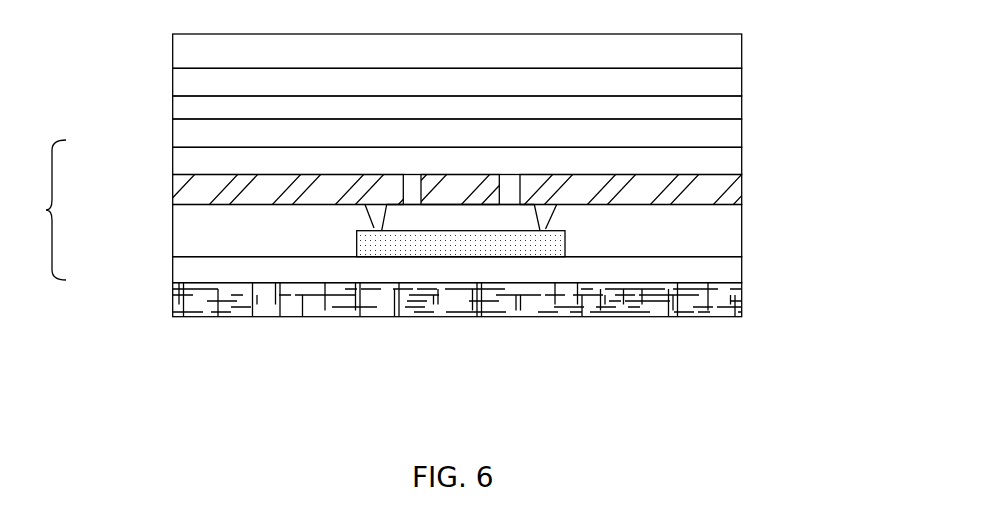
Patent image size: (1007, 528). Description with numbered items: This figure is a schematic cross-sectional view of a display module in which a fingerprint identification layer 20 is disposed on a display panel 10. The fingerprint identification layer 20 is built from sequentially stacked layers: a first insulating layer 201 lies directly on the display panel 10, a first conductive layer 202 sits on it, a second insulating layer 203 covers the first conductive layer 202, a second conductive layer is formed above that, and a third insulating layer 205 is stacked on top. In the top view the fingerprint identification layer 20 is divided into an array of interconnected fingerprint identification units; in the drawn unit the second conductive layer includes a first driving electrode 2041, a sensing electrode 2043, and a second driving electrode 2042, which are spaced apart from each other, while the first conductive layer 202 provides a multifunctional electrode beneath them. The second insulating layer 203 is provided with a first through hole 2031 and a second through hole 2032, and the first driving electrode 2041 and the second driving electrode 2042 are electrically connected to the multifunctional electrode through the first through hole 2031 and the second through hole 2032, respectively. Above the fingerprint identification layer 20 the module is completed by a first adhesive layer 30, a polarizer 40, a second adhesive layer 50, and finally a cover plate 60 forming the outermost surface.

The display panel 10 is at (705, 308).
The fingerprint identification layer 20 is at (48, 210).
The first insulating layer 201 is at (705, 277).
The first conductive layer 202 is at (415, 245).
The second insulating layer 203 is at (705, 232).
The first through hole 2031 is at (375, 215).
The second through hole 2032 is at (550, 215).
The first driving electrode 2041 is at (216, 197).
The second driving electrode 2042 is at (705, 195).
The sensing electrode 2043 is at (460, 192).
The third insulating layer 205 is at (705, 167).
The first adhesive layer 30 is at (705, 138).
The polarizer 40 is at (705, 113).
The second adhesive layer 50 is at (705, 85).
The cover plate 60 is at (705, 56).